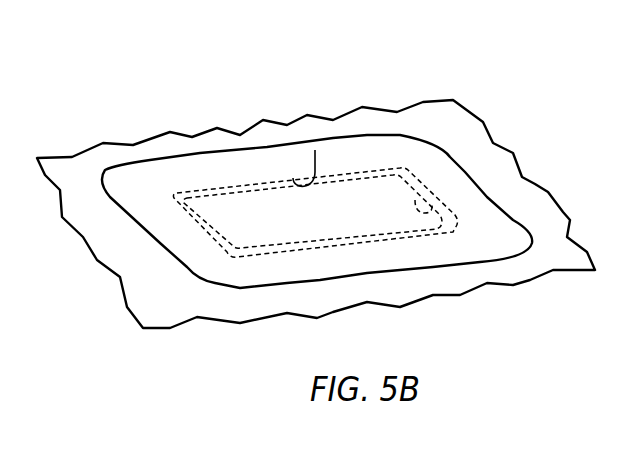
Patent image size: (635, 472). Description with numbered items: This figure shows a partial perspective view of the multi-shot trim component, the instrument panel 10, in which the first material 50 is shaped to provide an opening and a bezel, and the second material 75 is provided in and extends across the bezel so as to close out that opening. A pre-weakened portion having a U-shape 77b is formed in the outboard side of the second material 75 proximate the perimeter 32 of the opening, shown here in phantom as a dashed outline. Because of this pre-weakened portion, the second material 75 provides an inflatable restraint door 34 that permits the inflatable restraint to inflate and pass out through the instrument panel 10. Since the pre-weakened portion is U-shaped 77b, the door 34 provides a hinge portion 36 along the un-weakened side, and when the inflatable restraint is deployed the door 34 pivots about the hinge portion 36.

The instrument panel 10 is at (60, 105).
The first material 50 is at (164, 306).
The second material 75 is at (161, 203).
The perimeter 32 is at (360, 172).
The inflatable restraint door 34 is at (275, 217).
The hinge portion 36 is at (315, 150).
The U-shaped pre-weakened portion 77b is at (440, 215).